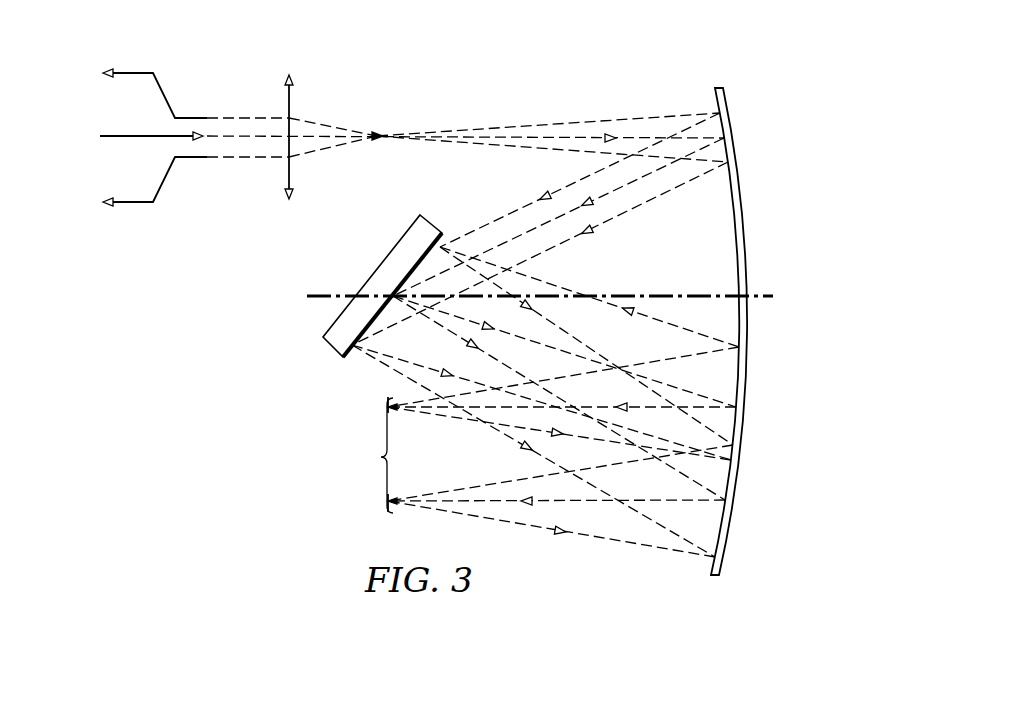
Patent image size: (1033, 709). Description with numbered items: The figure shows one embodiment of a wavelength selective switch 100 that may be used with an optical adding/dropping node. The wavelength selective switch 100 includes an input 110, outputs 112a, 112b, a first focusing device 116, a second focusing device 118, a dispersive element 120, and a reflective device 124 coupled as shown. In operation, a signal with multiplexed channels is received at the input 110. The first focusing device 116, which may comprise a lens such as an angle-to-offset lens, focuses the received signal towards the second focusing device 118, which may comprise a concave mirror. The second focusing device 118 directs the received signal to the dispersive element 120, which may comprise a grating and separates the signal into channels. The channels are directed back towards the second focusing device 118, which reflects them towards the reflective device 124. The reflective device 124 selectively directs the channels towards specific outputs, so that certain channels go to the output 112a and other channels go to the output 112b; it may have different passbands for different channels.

The wavelength selective switch 100 is at (240, 439).
The input 110 is at (140, 135).
The output 112a is at (130, 72).
The output 112b is at (130, 203).
The first focusing device 116 is at (290, 110).
The second focusing device 118 is at (748, 257).
The dispersive element 120 is at (378, 267).
The reflective device 124 is at (381, 457).